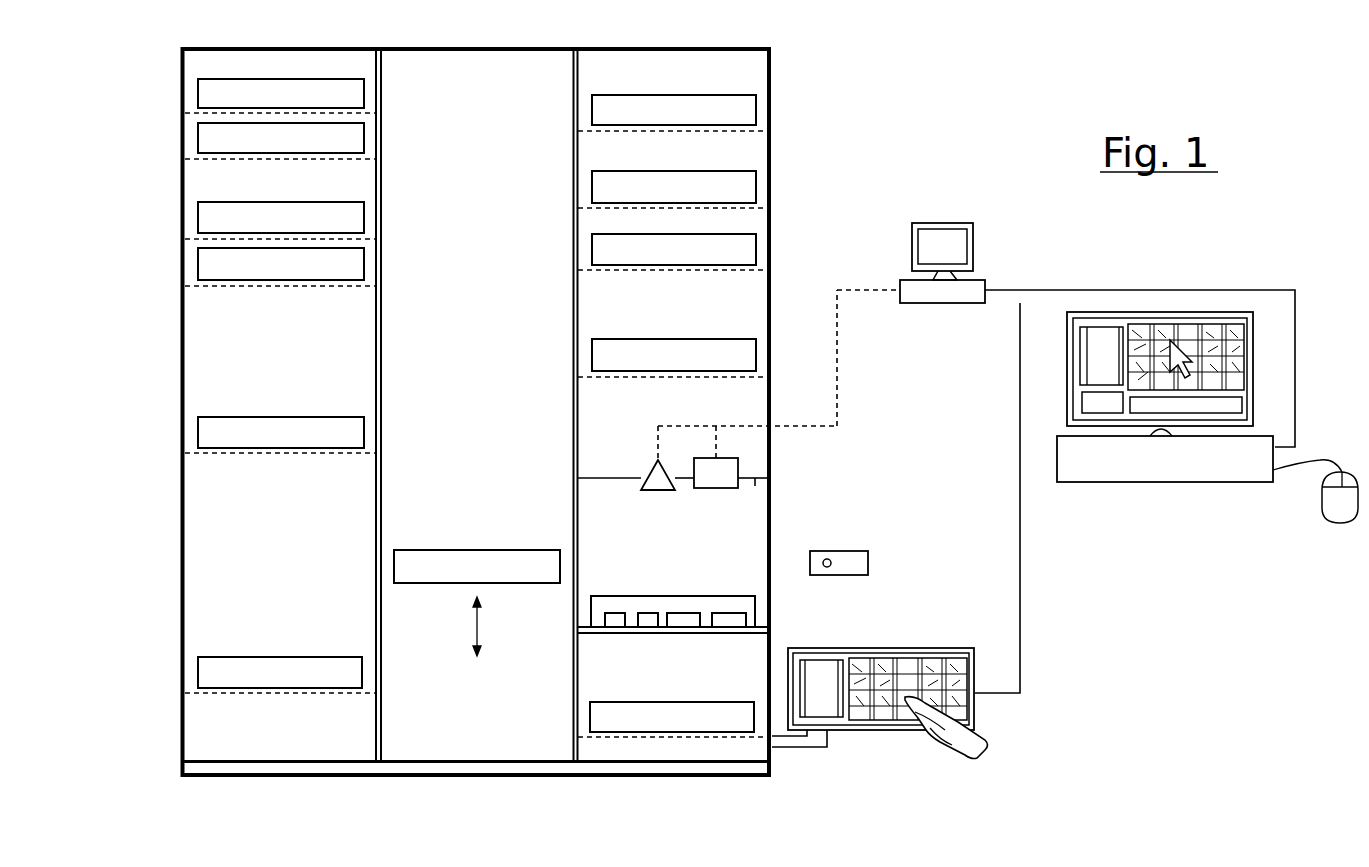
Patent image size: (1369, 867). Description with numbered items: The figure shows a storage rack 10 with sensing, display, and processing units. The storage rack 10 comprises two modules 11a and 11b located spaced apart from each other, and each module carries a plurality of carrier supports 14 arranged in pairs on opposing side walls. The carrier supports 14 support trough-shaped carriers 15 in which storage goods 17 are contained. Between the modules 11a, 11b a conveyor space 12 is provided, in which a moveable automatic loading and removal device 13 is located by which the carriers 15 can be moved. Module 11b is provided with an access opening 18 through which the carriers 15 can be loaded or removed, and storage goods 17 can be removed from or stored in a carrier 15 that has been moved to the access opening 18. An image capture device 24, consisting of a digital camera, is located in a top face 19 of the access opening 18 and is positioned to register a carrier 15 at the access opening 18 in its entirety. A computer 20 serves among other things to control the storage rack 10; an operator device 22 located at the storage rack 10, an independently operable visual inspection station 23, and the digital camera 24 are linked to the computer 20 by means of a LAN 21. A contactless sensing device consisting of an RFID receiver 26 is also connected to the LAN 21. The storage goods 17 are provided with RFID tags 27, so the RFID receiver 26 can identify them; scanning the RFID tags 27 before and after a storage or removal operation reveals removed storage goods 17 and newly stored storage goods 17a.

The storage rack 10 is at (795, 148).
The module 11a is at (283, 406).
The module 11b is at (673, 416).
The conveyor space 12 is at (498, 406).
The automatic loading and removal device 13 is at (472, 562).
The carrier supports 14 is at (297, 287).
The carrier 15 is at (277, 673).
The storage goods 17 is at (683, 620).
The newly stored storage goods 17a is at (857, 562).
The access opening 18 is at (776, 483).
The top face 19 is at (755, 485).
The computer 20 is at (970, 298).
The LAN 21 is at (845, 290).
The operator device 22 is at (950, 683).
The visual inspection station 23 is at (1190, 460).
The image capture device 24 is at (655, 478).
The RFID receiver 26 is at (720, 472).
The RFID tags 27 is at (827, 567).